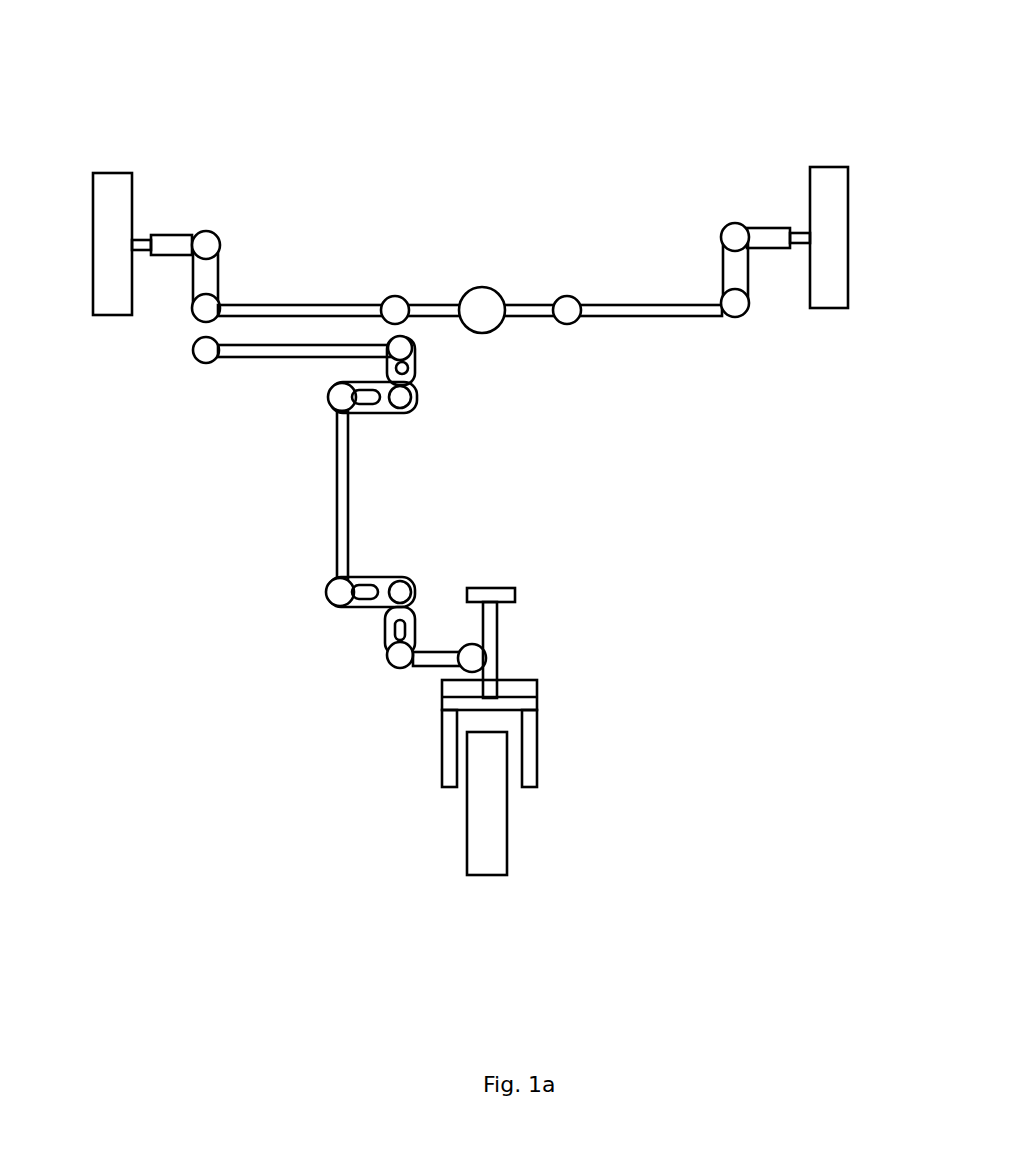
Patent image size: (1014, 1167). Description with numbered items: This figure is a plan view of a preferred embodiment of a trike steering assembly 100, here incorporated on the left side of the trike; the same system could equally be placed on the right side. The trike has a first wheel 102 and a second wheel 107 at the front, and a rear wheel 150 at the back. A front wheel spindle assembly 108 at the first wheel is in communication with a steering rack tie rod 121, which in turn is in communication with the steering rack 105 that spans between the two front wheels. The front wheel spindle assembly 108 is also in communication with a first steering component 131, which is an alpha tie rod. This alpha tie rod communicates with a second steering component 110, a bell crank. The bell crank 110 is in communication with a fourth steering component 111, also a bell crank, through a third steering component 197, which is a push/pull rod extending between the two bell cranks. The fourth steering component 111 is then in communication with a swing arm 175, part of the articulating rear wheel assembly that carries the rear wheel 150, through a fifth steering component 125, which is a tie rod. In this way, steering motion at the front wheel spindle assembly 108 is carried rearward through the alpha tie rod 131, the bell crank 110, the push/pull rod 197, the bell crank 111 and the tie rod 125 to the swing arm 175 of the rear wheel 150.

The steering assembly 100 is at (118, 87).
The first wheel 102 is at (93, 228).
The steering rack 105 is at (488, 286).
The second wheel 107 is at (850, 210).
The front wheel spindle assembly 108 is at (178, 238).
The second steering component (bell crank) 110 is at (413, 372).
The fourth steering component (bell crank) 111 is at (360, 577).
The steering rack tie rod 121 is at (334, 303).
The fifth steering component (tie rod) 125 is at (443, 653).
The first steering component (alpha tie rod) 131 is at (303, 357).
The rear wheel 150 is at (467, 822).
The swing arm 175 is at (498, 648).
The third steering component (push/pull rod) 197 is at (337, 503).